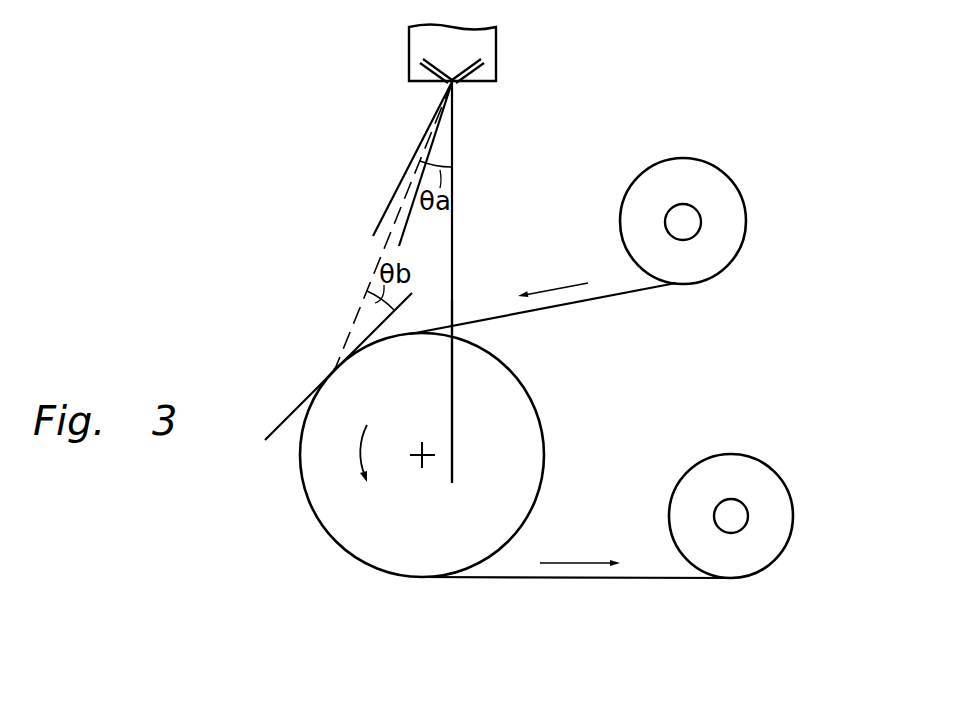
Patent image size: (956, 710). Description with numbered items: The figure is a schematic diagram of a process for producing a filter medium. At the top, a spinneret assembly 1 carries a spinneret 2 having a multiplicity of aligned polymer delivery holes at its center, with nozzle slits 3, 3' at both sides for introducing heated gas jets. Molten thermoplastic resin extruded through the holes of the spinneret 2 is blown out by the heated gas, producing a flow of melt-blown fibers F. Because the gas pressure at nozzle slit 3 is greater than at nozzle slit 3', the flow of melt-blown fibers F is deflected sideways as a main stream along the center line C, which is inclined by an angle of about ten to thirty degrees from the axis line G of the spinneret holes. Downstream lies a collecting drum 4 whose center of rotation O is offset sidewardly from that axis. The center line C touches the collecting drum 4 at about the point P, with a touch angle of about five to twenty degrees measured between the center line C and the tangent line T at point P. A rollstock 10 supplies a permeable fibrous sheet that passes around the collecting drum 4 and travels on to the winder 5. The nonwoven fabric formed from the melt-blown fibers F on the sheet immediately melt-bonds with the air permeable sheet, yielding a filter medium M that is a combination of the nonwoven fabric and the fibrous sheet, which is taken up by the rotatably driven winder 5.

The spinneret assembly 1 is at (505, 70).
The spinneret 2 is at (453, 84).
The nozzle slit 3 is at (498, 87).
The nozzle slit 3' is at (412, 92).
The collecting drum 4 is at (520, 422).
The winder 5 is at (728, 502).
The rollstock 10 is at (682, 208).
The flow of melt-blown fibers F is at (391, 198).
The center line of the fiber flow C is at (365, 282).
The axis line of the spinneret holes G is at (453, 228).
The tangent line T is at (280, 423).
The touch point on the collecting drum P is at (330, 368).
The center of rotation of the collecting drum O is at (425, 442).
The filter medium M is at (532, 578).